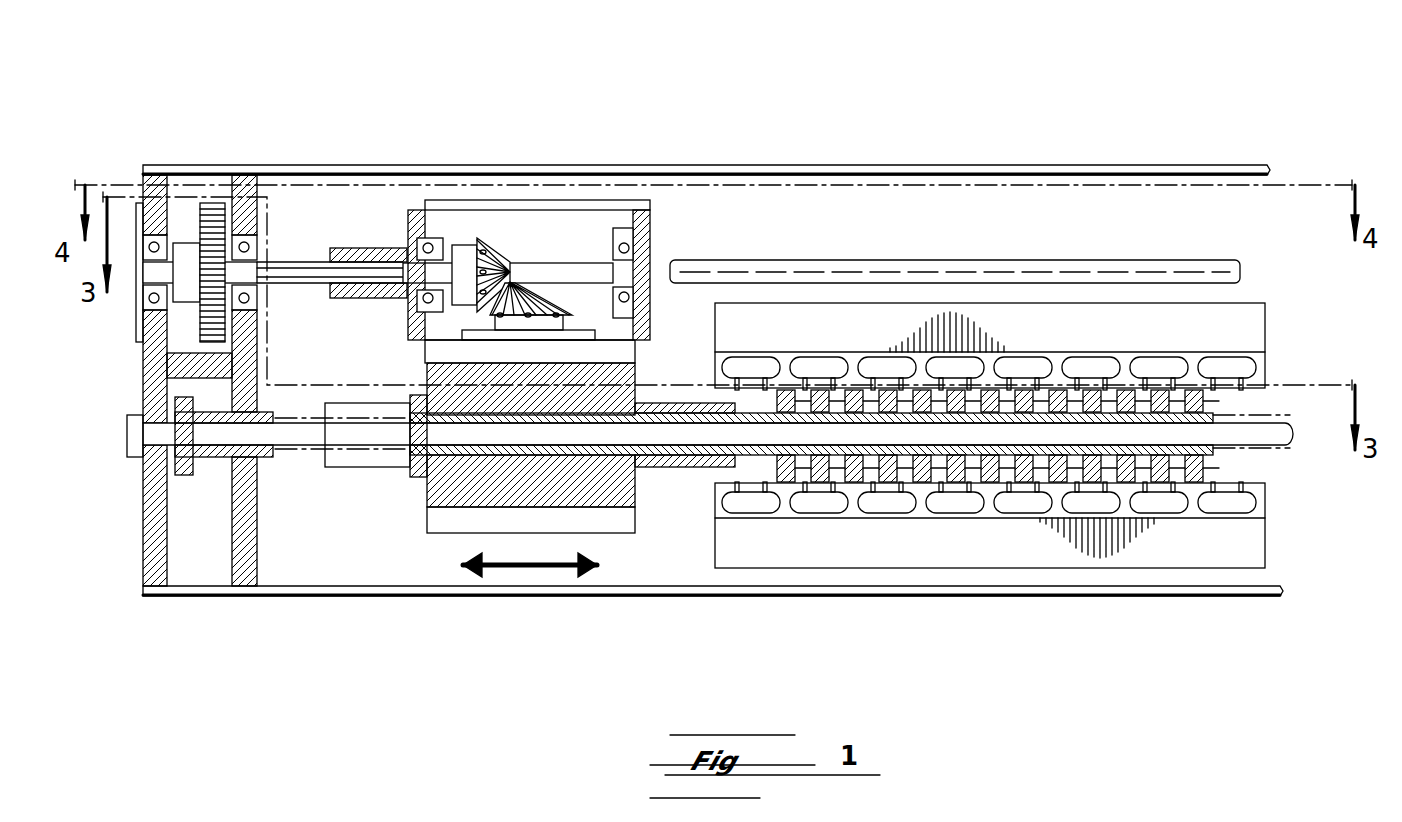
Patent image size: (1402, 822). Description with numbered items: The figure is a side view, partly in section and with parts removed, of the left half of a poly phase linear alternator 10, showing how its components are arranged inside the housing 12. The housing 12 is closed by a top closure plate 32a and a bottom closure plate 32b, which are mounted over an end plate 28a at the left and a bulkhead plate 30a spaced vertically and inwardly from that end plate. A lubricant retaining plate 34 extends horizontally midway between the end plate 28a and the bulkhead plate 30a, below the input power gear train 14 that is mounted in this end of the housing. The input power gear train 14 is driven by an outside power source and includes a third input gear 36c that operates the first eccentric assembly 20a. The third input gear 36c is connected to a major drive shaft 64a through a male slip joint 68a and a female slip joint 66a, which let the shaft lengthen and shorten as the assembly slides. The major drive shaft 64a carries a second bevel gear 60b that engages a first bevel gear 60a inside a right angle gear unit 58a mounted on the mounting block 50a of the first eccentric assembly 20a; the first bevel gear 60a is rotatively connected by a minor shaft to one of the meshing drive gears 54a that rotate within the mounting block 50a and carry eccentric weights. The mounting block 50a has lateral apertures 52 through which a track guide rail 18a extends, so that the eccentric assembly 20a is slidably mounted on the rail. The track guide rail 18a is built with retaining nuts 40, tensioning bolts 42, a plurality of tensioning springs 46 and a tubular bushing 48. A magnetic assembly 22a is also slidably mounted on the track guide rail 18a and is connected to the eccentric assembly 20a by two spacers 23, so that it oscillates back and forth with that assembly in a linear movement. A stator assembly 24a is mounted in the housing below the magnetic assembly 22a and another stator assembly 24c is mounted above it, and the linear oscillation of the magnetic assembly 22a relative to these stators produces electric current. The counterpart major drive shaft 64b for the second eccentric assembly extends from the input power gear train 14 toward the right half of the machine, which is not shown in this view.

The poly phase linear alternator 10 is at (926, 50).
The housing 12 is at (706, 115).
The top closure plate 32a is at (350, 164).
The bottom closure plate 32b is at (582, 597).
The end plate 28a is at (150, 383).
The bulkhead plate 30a is at (243, 578).
The lubricant retaining plate 34 is at (218, 362).
The input power gear train 14 is at (222, 215).
The third input gear 36c is at (198, 214).
The major drive shaft 64a is at (242, 272).
The male slip joint 68a is at (310, 268).
The female slip joint 66a is at (380, 288).
The right angle gear unit 58a is at (638, 202).
The second bevel gear 60b is at (487, 245).
The first bevel gear 60a is at (552, 298).
The major drive shaft 64b is at (1047, 270).
The tensioning springs 46 is at (315, 417).
The retaining nuts 40 is at (138, 458).
The tensioning bolts 42 is at (177, 476).
The drive gear 54a is at (328, 465).
The tubular bushing 48 is at (427, 490).
The lateral apertures 52 is at (573, 455).
The first eccentric assembly 20a is at (485, 585).
The mounting block 50a is at (436, 532).
The track guide rail 18a is at (700, 467).
The spacers 23 is at (668, 424).
The magnetic assembly 22a is at (1212, 395).
The stator assembly 24c is at (1277, 324).
The stator assembly 24a is at (1278, 543).